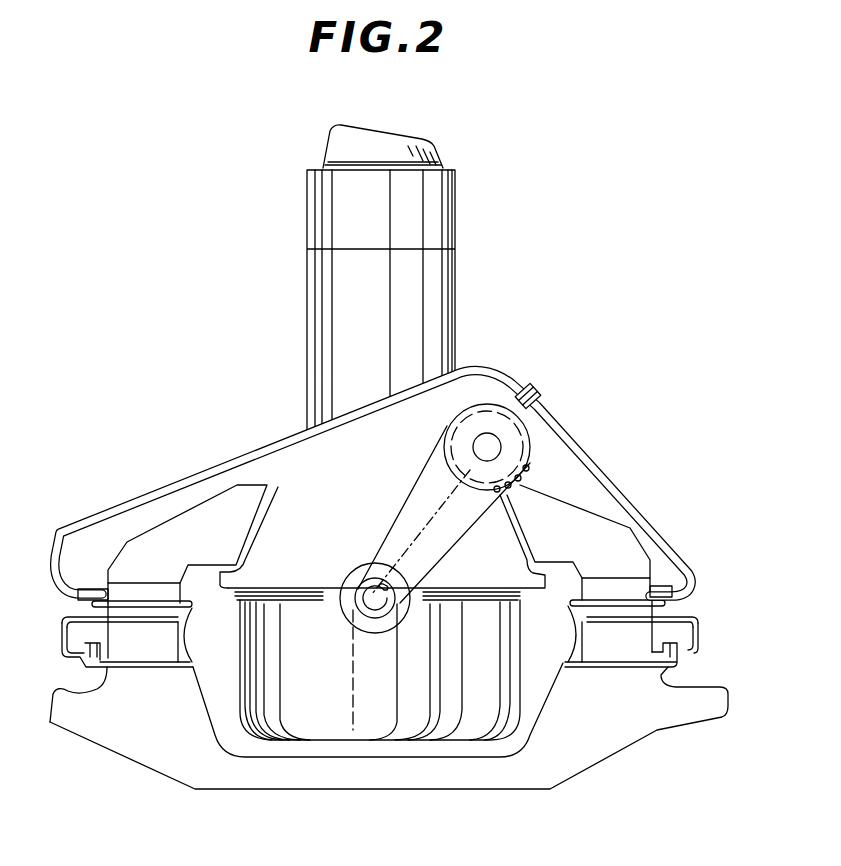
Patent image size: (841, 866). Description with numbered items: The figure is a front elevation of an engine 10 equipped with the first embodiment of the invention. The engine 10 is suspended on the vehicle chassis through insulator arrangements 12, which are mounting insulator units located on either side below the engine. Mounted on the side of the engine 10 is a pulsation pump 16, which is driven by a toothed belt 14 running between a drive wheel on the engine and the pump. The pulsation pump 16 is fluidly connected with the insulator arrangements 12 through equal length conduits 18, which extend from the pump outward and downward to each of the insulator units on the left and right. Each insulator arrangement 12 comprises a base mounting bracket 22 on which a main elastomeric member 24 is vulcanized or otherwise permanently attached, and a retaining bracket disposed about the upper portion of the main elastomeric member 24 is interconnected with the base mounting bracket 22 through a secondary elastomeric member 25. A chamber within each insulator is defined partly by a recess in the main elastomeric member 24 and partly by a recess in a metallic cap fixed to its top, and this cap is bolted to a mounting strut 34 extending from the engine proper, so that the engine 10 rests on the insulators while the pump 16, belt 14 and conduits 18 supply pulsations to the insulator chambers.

The engine 10 is at (446, 316).
The insulator arrangement 12 is at (200, 635).
The toothed belt 14 is at (398, 512).
The pulsation pump 16 is at (537, 446).
The conduit 18 is at (204, 470).
The base mounting bracket 22 is at (175, 667).
The main elastomeric member 24 is at (130, 652).
The secondary elastomeric member 25 is at (77, 648).
The mounting strut 34 is at (140, 540).